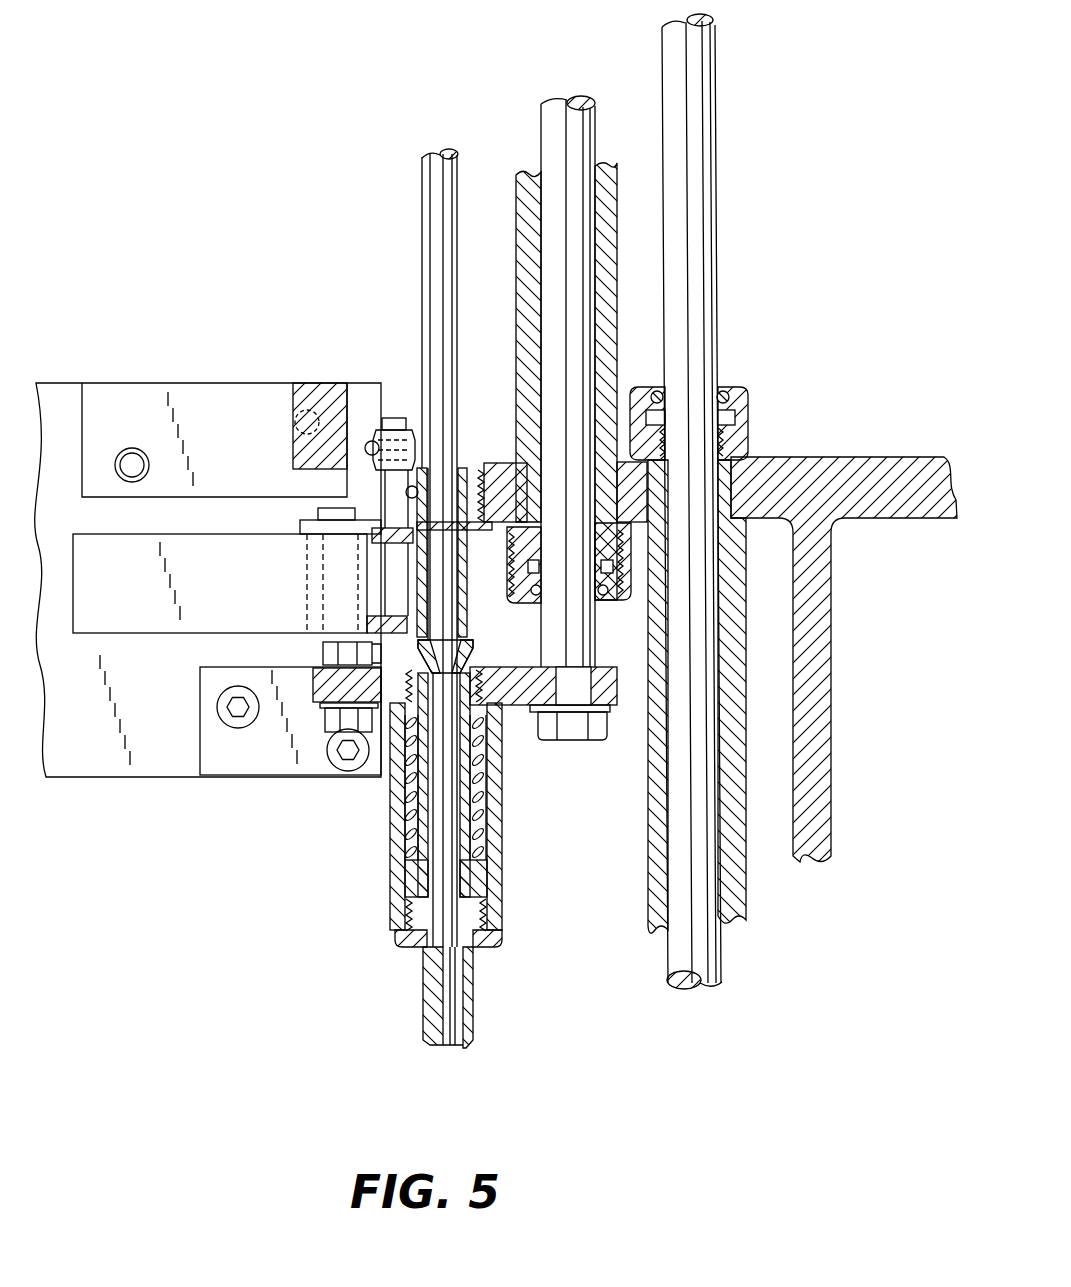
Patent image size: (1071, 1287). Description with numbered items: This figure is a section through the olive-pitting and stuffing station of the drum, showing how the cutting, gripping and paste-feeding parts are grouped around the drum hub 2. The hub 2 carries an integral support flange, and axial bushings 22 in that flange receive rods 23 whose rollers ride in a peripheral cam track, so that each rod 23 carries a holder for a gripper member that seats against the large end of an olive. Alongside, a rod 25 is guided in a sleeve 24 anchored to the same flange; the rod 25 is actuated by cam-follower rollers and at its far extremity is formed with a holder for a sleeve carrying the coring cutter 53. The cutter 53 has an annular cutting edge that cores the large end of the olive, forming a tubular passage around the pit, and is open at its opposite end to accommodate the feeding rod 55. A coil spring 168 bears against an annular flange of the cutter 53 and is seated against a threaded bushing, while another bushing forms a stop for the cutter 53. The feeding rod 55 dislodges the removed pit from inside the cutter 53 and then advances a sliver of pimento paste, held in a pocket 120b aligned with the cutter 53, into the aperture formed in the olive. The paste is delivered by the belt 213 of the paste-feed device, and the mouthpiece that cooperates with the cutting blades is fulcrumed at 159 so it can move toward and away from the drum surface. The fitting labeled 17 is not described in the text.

The hub 2 is at (826, 801).
The fitting 17 is at (749, 393).
The axial bushing 22 is at (660, 882).
The rod 23 is at (710, 150).
The sleeve 24 is at (612, 175).
The rod 25 is at (550, 127).
The cutter 53 is at (410, 880).
The feeding rod 55 is at (430, 228).
The pocket 120b is at (469, 606).
The fulcrum 159 is at (323, 652).
The coil spring 168 is at (412, 823).
The belt 213 is at (268, 597).